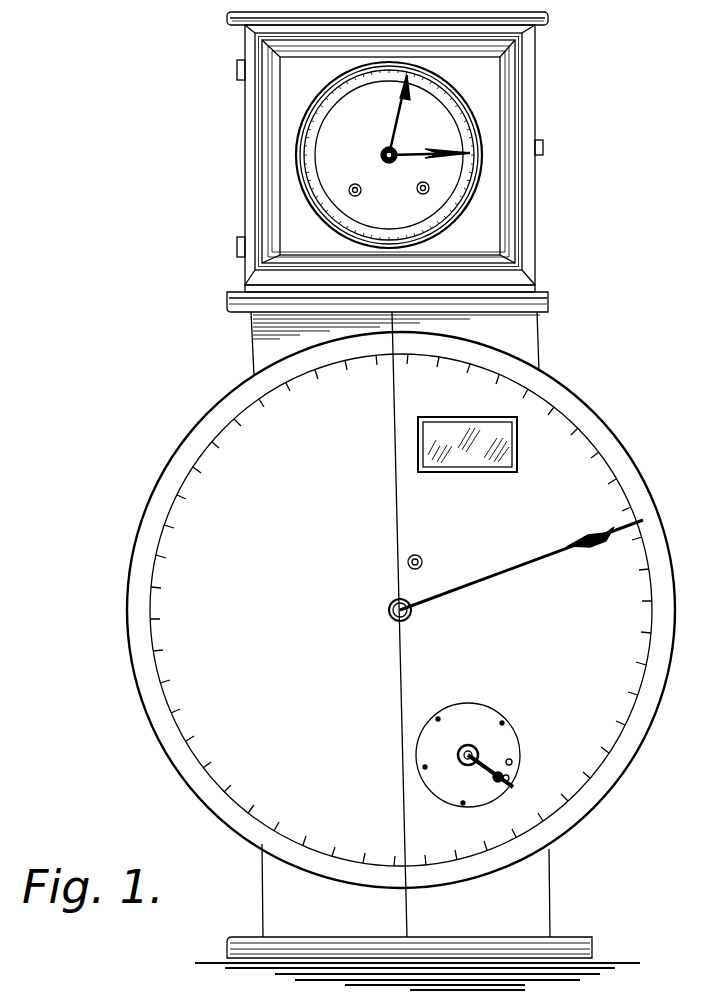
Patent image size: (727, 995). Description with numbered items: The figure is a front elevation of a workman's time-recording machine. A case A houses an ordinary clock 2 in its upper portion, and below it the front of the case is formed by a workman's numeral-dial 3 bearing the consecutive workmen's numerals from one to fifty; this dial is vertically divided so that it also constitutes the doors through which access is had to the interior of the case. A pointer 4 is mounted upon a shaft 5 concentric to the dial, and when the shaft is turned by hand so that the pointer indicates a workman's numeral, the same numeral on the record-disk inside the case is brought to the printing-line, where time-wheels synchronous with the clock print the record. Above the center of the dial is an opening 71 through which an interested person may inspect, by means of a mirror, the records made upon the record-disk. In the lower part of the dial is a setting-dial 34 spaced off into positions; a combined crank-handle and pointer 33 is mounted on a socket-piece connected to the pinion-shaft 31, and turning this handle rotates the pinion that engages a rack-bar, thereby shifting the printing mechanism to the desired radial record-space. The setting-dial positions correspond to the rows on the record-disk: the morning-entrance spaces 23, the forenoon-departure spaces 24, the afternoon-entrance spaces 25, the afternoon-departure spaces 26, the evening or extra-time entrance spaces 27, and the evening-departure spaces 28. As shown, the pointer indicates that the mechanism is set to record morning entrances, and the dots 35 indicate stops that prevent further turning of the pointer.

The case A is at (417, 501).
The clock 2 is at (389, 155).
The workman's numeral-dial 3 is at (401, 610).
The pointer 4 is at (521, 565).
The shaft 5 is at (390, 612).
The opening 71 is at (467, 459).
The setting-dial 34 is at (468, 755).
The pinion-shaft 31 is at (482, 751).
The combined crank-handle and pointer 33 is at (489, 774).
The stops 35 is at (509, 777).
The afternoon-departure record-spaces 26 is at (427, 702).
The evening-entrance record-spaces 27 is at (522, 708).
The afternoon-entrance record-spaces 25 is at (396, 760).
The forenoon-departure record-spaces 24 is at (450, 821).
The evening-departure record-spaces 28 is at (545, 763).
The morning-entrance record-spaces 23 is at (536, 823).